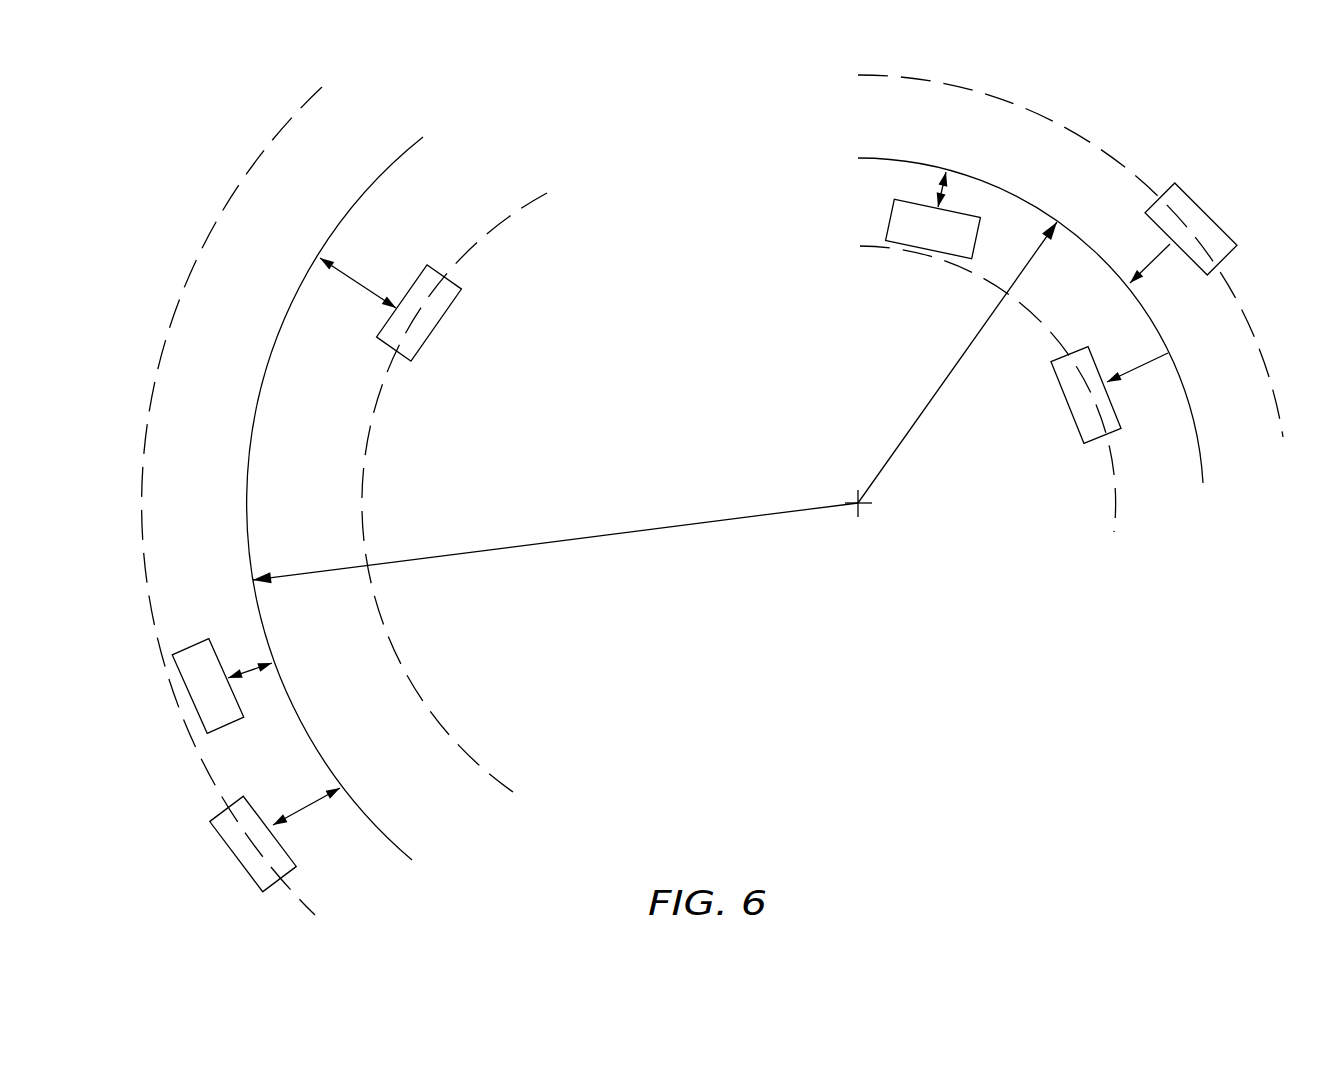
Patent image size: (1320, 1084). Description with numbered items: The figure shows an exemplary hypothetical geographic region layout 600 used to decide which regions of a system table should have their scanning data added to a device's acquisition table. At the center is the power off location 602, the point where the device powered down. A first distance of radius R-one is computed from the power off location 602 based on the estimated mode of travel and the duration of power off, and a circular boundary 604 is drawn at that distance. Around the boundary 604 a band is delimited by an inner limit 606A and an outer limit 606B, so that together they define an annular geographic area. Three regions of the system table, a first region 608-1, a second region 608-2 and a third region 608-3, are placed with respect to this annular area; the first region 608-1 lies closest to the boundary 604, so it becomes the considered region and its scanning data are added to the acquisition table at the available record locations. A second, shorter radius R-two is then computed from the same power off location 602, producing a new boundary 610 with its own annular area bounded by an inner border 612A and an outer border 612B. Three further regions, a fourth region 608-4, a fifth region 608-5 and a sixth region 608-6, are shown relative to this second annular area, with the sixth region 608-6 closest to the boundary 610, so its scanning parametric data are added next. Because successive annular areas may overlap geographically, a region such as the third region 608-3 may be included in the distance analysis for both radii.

The geographic region layout 600 is at (1040, 696).
The power off location 602 is at (867, 508).
The circular boundary 604 is at (393, 166).
The inner limit 606A is at (407, 680).
The outer limit 606B is at (214, 220).
The REG-1 608-1 is at (220, 731).
The REG-2 608-2 is at (217, 822).
The REG-3 608-3 is at (443, 318).
The REG-4 608-4 is at (1157, 211).
The REG-5 608-5 is at (1113, 432).
The REG-6 608-6 is at (890, 209).
The new boundary 610 is at (883, 160).
The inner border 612A is at (865, 249).
The outer border 612B is at (993, 98).